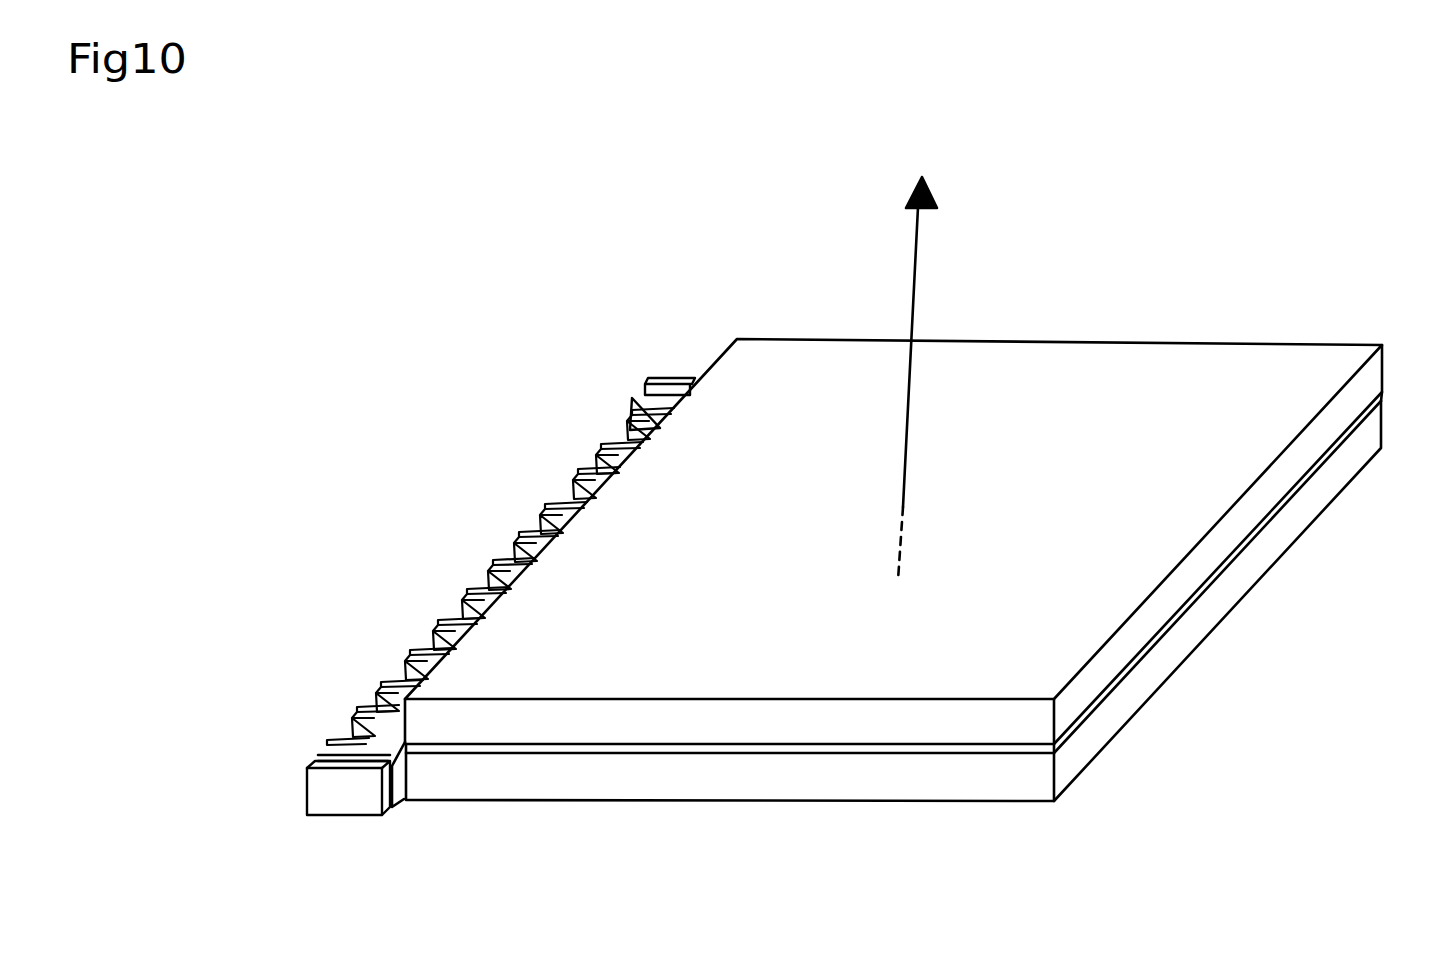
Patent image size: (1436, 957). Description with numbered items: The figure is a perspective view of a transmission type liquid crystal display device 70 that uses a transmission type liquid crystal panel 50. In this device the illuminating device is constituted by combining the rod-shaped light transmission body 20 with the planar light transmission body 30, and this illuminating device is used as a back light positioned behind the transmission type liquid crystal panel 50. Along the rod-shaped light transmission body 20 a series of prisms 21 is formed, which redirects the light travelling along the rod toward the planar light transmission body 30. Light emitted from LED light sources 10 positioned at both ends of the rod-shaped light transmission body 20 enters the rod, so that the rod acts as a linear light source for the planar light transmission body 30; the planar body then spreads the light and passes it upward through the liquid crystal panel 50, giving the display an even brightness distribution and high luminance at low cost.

The light source (LED) 10 is at (682, 376).
The rod-shaped light transmission body 20 is at (530, 567).
The prism 21 is at (567, 487).
The planar light transmission body 30 is at (1198, 621).
The transmission type liquid crystal panel 50 is at (1148, 371).
The liquid crystal display device 70 is at (1108, 293).